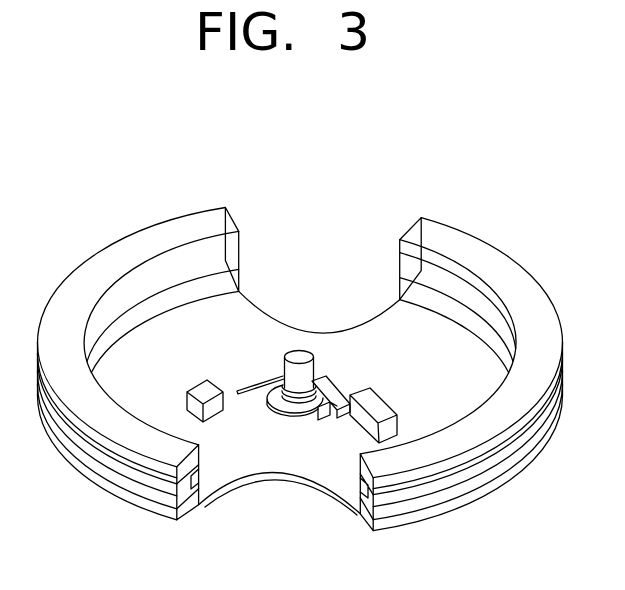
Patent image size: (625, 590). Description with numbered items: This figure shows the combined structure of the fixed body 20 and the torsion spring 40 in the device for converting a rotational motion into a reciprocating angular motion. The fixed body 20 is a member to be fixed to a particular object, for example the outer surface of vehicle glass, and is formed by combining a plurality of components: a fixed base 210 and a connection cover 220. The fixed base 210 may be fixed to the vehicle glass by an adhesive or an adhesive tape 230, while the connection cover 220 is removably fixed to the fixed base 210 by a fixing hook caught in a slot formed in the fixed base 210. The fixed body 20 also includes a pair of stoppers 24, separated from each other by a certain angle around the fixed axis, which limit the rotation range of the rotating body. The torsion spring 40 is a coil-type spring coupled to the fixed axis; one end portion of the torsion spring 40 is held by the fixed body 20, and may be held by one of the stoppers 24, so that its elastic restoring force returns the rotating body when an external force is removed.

The fixed body 20 is at (294, 352).
The fixed base 210 is at (236, 256).
The connection cover 220 is at (465, 360).
The adhesive tape 230 is at (152, 243).
The stoppers 24 is at (197, 390).
The torsion spring 40 is at (245, 392).